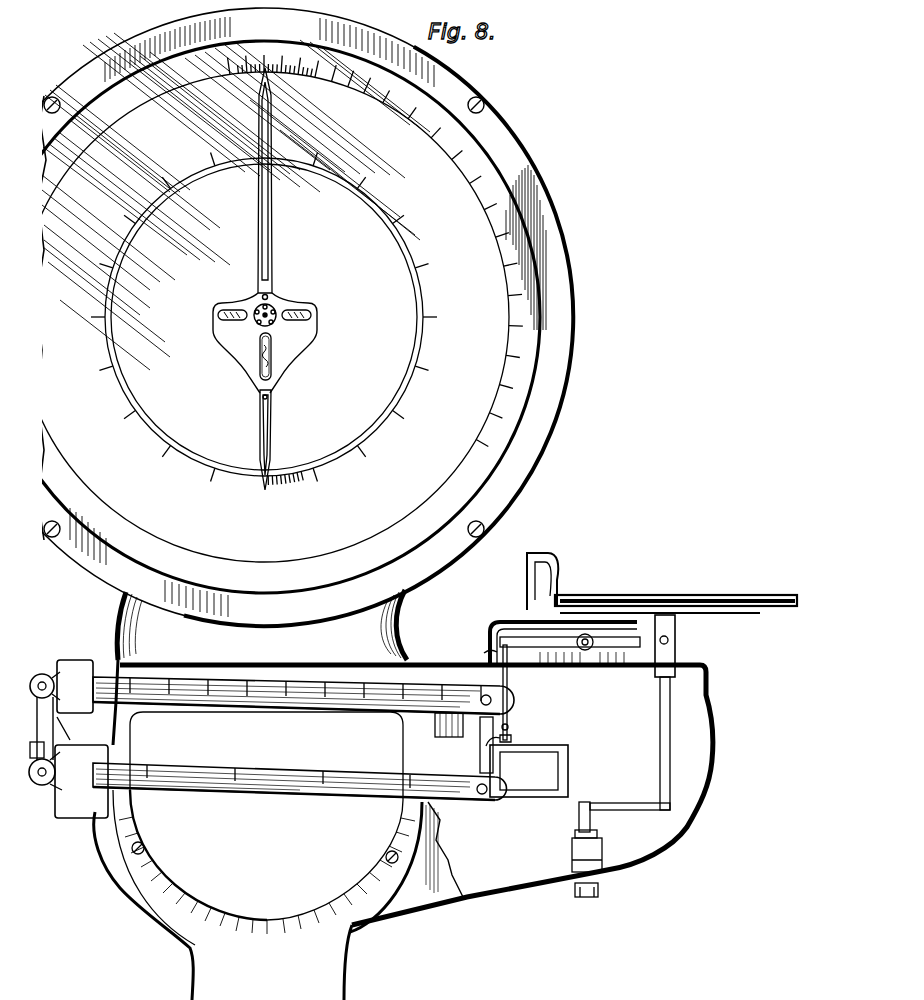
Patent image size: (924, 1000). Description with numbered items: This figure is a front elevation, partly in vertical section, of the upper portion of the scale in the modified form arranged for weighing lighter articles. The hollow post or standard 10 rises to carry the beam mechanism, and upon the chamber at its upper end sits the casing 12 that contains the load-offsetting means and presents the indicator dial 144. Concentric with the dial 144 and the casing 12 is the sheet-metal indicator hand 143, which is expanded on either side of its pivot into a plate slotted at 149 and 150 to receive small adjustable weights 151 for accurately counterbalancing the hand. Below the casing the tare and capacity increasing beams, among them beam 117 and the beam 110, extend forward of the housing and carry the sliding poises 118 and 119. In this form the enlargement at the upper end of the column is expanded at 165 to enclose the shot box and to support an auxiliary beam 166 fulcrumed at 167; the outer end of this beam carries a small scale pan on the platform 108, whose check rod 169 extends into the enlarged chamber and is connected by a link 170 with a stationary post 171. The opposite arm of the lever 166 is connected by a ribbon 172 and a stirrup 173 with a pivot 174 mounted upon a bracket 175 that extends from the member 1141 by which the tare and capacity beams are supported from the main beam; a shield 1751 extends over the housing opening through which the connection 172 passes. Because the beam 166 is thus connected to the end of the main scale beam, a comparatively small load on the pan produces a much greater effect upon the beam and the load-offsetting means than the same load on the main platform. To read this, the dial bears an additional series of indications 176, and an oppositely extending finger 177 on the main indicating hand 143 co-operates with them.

The hollow post or standard 10 is at (397, 795).
The casing 12 is at (566, 290).
The platform 108 is at (690, 618).
The upper poise beam 110 is at (296, 712).
The lever housing block 1141 is at (482, 760).
The capacity increasing beam 117 is at (296, 801).
The sliding poise 118 is at (75, 668).
The sliding poise 119 is at (78, 813).
The indicator hand 143 is at (273, 141).
The indicator dial 144 is at (438, 375).
The slot 149 is at (227, 322).
The slot 150 is at (262, 352).
The adjustable weight 151 is at (297, 322).
The expanded chamber 165 is at (656, 866).
The auxiliary beam 166 is at (545, 643).
The fulcrum 167 is at (570, 650).
The check rod 169 is at (660, 746).
The link 170 is at (621, 805).
The stationary post 171 is at (578, 824).
The ribbon 172 is at (508, 691).
The stirrup 173 is at (512, 737).
The pivot 174 is at (510, 727).
The bracket 175 is at (488, 742).
The upper hook 1751 is at (490, 638).
The additional series of indications 176 is at (430, 290).
The finger 177 is at (283, 438).